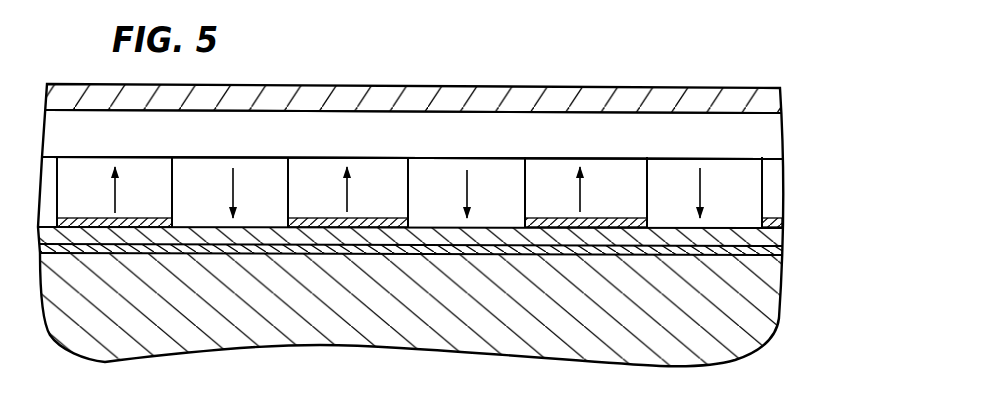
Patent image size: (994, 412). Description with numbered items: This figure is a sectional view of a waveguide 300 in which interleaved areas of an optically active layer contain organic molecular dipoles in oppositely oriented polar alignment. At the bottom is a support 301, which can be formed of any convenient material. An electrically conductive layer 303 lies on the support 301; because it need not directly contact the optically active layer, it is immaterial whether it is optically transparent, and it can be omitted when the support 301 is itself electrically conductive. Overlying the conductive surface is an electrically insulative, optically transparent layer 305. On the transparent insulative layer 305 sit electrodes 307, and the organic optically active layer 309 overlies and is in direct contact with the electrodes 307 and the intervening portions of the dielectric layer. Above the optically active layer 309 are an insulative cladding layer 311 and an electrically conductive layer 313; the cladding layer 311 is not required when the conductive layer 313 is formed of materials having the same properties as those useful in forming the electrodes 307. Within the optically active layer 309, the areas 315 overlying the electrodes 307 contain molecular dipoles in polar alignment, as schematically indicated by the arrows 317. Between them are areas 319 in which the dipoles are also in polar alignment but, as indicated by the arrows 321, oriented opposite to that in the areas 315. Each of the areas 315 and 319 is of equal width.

The waveguide 300 is at (523, 75).
The support 301 is at (776, 318).
The electrically conductive layer 303 is at (782, 255).
The electrically insulative, optically transparent layer 305 is at (782, 237).
The electrodes 307 is at (588, 218).
The organic optically active layer 309 is at (782, 190).
The insulative cladding layer 311 is at (781, 137).
The electrically conductive layer 313 is at (781, 100).
The areas 315 is at (413, 203).
The arrows 317 is at (349, 202).
The areas 319 is at (186, 158).
The arrows 321 is at (234, 195).